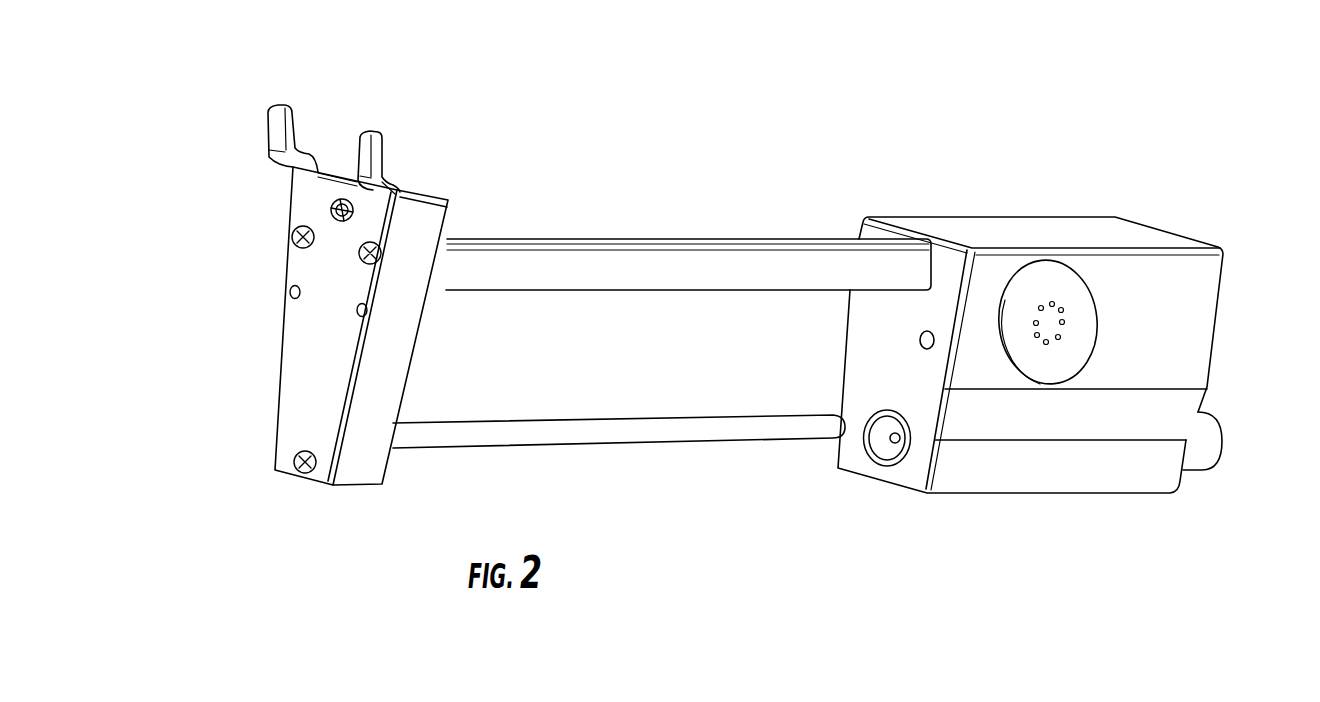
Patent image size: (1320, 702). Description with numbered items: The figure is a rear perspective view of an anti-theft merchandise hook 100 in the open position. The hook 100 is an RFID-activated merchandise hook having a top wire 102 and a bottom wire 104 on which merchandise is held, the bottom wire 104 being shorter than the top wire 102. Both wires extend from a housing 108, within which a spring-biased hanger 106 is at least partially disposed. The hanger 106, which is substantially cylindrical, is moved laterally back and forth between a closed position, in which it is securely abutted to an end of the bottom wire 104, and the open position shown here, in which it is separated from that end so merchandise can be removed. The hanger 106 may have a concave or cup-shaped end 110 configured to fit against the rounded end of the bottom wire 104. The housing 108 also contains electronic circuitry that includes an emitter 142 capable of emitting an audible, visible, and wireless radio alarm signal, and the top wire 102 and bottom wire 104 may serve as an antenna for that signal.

The anti-theft merchandise hook 100 is at (988, 79).
The top wire 102 is at (652, 238).
The bottom wire 104 is at (623, 442).
The spring-biased hanger 106 is at (1222, 443).
The housing 108 is at (1176, 240).
The concave or cup-shaped end 110 is at (870, 466).
The emitter 142 is at (1060, 296).